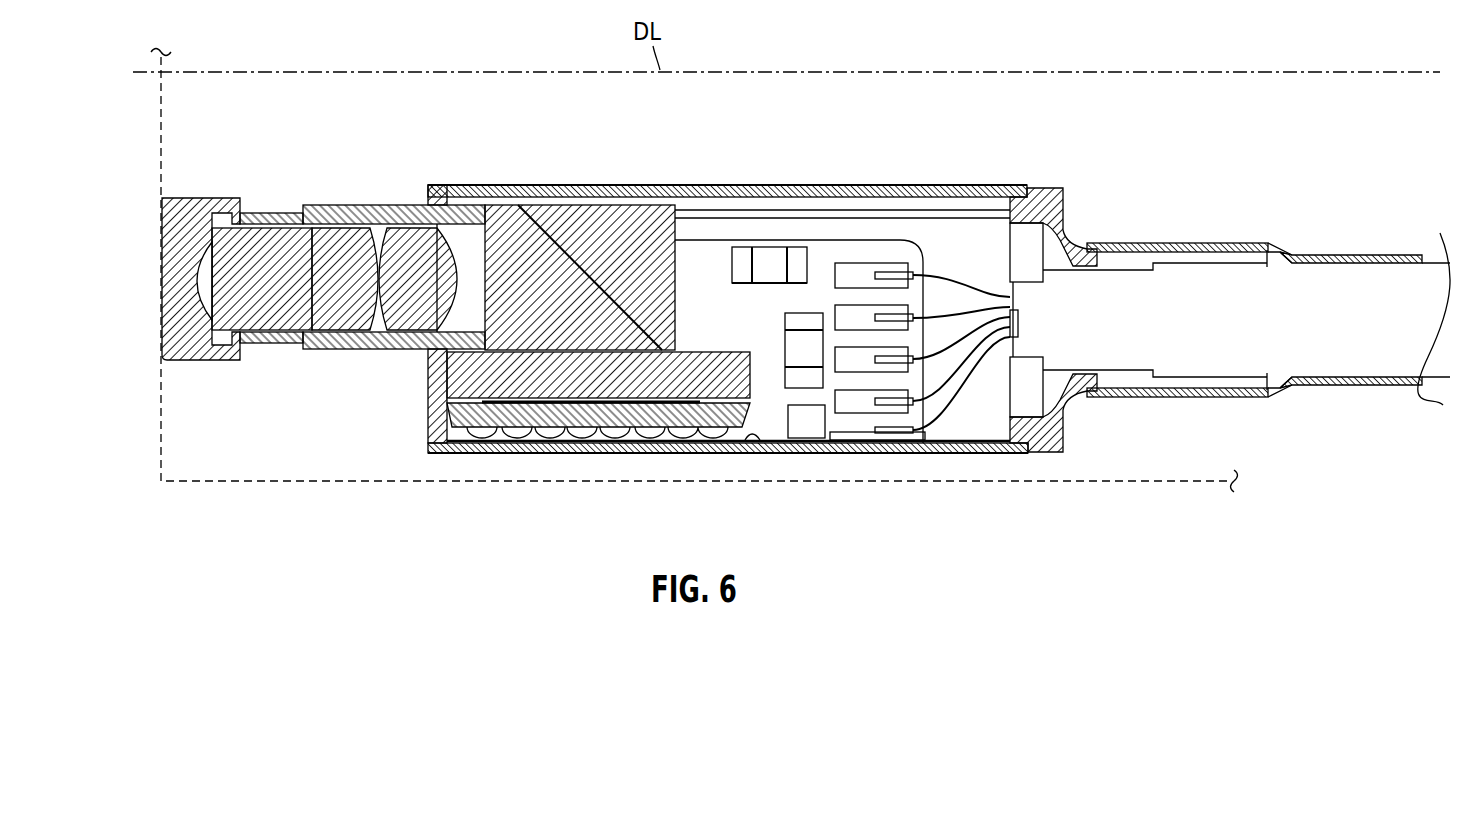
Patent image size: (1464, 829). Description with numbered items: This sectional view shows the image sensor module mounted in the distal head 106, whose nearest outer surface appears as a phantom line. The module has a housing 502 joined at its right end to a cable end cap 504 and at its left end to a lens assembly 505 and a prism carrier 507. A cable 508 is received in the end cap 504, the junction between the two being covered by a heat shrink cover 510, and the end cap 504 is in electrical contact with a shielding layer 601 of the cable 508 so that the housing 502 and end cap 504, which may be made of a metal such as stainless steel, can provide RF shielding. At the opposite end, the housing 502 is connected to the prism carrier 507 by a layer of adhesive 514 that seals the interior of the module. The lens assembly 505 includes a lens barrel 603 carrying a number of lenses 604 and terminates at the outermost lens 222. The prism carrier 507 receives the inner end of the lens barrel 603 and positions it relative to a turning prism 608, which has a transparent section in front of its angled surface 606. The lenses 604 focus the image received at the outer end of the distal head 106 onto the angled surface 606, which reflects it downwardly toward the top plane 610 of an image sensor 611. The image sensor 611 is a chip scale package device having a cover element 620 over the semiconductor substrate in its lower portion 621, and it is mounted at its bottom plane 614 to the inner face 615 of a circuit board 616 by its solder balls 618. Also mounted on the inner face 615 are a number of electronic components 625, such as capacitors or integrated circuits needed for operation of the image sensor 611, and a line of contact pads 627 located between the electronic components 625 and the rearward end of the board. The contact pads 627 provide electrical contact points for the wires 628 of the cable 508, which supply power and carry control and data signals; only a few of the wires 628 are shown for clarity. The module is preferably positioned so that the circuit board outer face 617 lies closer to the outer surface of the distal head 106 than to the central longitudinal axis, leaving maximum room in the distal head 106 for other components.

The distal head 106 is at (212, 482).
The lens 222 is at (162, 276).
The housing 502 is at (688, 324).
The cable end cap 504 is at (1048, 200).
The lens assembly 505 is at (283, 263).
The prism carrier 507 is at (365, 205).
The cable 508 is at (1326, 256).
The heat shrink cover 510 is at (1256, 243).
The adhesive 514 is at (430, 411).
The shielding layer 601 is at (1128, 372).
The lens barrel 603 is at (268, 218).
The lenses 604 is at (344, 310).
The angled surface 606 is at (548, 242).
The turning prism 608 is at (580, 235).
The top plane 610 is at (715, 426).
The image sensor 611 is at (755, 405).
The bottom plane 614 is at (458, 432).
The inner face 615 is at (752, 434).
The circuit board 616 is at (858, 453).
The circuit board outer face 617 is at (498, 447).
The solder balls 618 is at (615, 441).
The cover element 620 is at (723, 375).
The lower portion 621 is at (549, 418).
The electronic components 625 is at (800, 342).
The contact pads 627 is at (862, 315).
The wires 628 is at (967, 284).